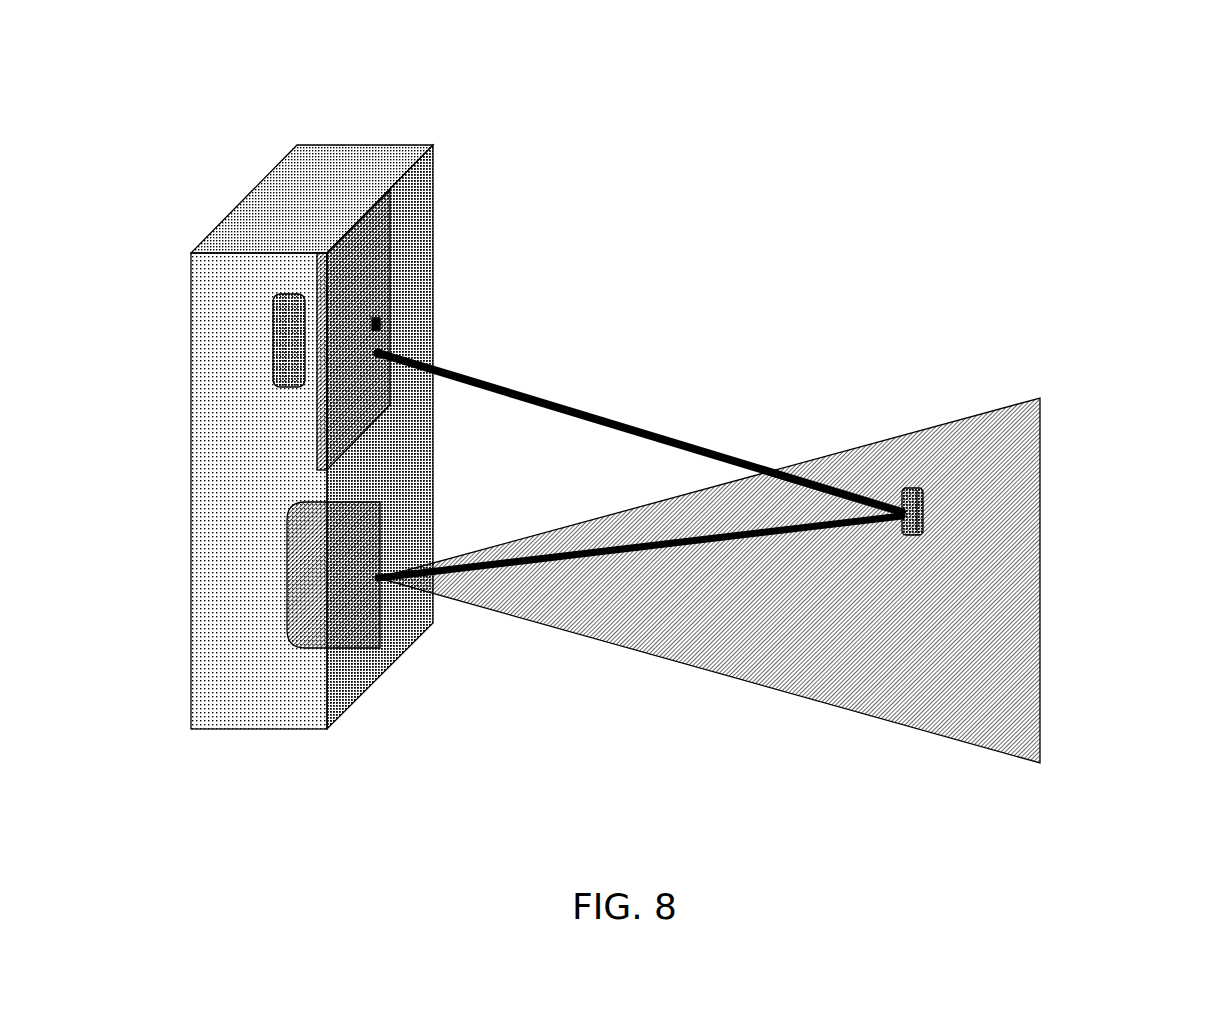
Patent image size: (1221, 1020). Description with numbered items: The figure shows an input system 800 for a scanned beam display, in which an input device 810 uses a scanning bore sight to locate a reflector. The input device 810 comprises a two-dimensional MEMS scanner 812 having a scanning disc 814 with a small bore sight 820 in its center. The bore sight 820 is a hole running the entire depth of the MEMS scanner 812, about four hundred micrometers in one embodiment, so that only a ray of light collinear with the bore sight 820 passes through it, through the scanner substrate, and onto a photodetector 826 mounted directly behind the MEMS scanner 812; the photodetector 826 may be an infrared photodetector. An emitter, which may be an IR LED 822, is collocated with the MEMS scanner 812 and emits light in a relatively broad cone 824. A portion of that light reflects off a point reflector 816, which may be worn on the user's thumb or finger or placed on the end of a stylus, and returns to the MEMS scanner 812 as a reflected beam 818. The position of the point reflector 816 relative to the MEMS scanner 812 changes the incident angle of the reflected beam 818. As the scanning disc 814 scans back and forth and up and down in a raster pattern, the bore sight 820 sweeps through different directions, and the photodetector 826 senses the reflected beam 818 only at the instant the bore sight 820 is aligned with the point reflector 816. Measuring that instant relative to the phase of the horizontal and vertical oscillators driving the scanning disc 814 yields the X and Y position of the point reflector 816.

The input system 800 is at (1112, 85).
The input device 810 is at (433, 195).
The MEMS scanner 812 is at (372, 267).
The scanning disc 814 is at (375, 323).
The point reflector 816 is at (923, 512).
The reflected beam 818 is at (615, 410).
The bore sight 820 is at (372, 341).
The IR LED 822 is at (372, 632).
The cone 824 is at (825, 705).
The photodetector 826 is at (272, 342).